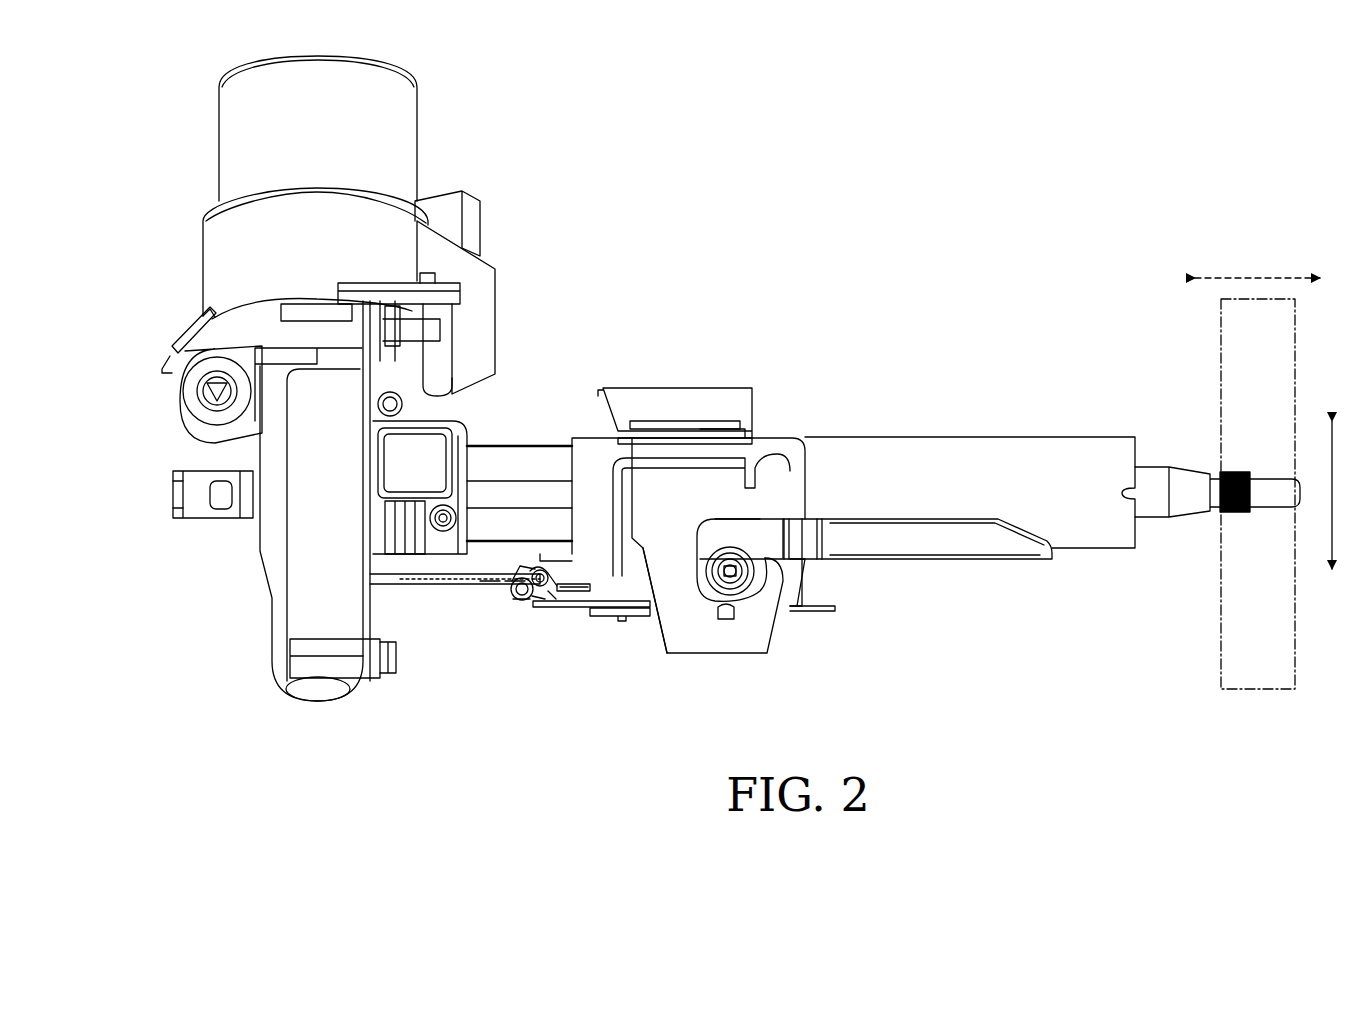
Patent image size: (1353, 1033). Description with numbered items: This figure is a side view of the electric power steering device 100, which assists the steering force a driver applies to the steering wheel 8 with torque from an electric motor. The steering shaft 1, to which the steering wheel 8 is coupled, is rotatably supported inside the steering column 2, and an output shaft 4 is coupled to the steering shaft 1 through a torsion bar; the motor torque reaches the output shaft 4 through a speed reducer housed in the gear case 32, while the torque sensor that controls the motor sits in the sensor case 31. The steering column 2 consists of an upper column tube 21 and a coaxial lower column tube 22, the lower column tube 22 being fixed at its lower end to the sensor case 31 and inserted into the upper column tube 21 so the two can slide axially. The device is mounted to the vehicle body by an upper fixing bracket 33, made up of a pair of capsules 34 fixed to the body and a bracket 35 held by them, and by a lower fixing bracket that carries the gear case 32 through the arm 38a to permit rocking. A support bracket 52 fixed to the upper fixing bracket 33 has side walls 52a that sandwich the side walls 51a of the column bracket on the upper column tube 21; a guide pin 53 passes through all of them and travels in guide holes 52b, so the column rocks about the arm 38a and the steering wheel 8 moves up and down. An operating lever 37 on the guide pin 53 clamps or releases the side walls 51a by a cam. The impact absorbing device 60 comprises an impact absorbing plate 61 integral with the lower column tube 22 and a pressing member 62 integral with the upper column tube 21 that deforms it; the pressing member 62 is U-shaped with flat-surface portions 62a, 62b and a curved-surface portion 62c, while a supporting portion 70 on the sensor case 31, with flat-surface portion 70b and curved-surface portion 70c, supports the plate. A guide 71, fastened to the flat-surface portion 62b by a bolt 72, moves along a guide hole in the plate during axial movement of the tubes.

The steering shaft 1 is at (1165, 455).
The steering column 2 is at (968, 432).
The output shaft 4 is at (248, 513).
The steering wheel 8 is at (1243, 690).
The upper column tube 21 is at (920, 445).
The lower column tube 22 is at (525, 460).
The sensor case 31 is at (417, 575).
The gear case 32 is at (315, 605).
The upper fixing bracket 33 is at (632, 380).
The capsules 34 is at (730, 438).
The bracket 35 is at (670, 430).
The operating lever 37 is at (980, 545).
The arm 38a is at (195, 398).
The side walls of the column bracket 51a is at (805, 585).
The support bracket 52 is at (765, 652).
The side walls of the support bracket 52a is at (665, 638).
The guide holes 52b is at (727, 618).
The guide pin 53 is at (742, 560).
The impact absorbing device 60 is at (553, 552).
The impact absorbing plate 61 is at (527, 600).
The pressing member 62 is at (583, 576).
The flat-surface portion 62a is at (575, 592).
The flat-surface portion 62b is at (572, 596).
The curved-surface portion 62c is at (540, 600).
The supporting portion 70 is at (475, 590).
The flat-surface portion 70b is at (492, 587).
The curved-surface portion 70c is at (512, 585).
The guide 71 is at (640, 616).
The bolt 72 is at (622, 607).
The electric power steering device 100 is at (1068, 388).